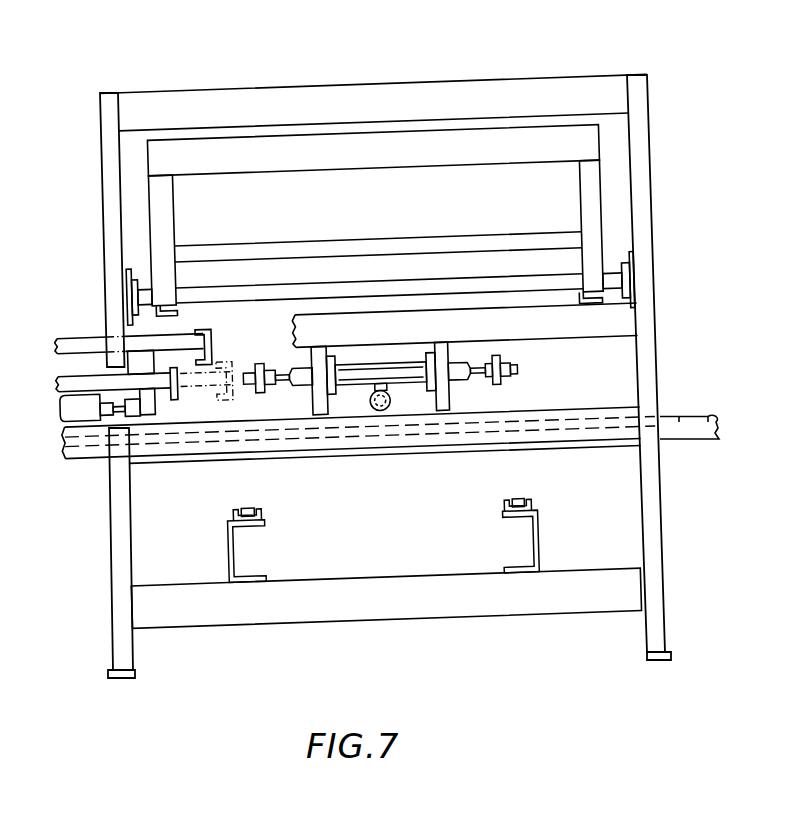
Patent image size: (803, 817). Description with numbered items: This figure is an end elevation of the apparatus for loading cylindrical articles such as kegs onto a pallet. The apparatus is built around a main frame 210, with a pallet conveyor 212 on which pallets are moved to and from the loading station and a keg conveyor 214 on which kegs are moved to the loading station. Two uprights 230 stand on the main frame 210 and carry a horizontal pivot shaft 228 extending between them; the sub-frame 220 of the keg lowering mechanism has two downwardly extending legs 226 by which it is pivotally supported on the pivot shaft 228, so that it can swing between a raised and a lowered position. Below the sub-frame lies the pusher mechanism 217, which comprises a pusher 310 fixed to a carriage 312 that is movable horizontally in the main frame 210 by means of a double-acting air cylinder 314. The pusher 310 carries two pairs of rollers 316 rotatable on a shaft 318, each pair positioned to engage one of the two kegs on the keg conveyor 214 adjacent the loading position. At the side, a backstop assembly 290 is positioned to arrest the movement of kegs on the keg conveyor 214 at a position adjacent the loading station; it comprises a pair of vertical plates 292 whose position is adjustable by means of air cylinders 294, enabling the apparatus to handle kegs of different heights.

The main frame 210 is at (206, 105).
The sub-frame 220 is at (547, 143).
The downwardly extending legs 226 is at (163, 193).
The uprights 230 is at (113, 217).
The horizontal pivot shaft 228 is at (557, 280).
The backstop assembly 290 is at (82, 382).
The vertical plates 292 is at (177, 397).
The air cylinders 294 is at (84, 413).
The rollers 316 is at (257, 362).
The shaft 318 is at (283, 385).
The carriage 312 is at (355, 375).
The double-acting air cylinder 314 is at (387, 411).
The pusher 310 is at (477, 375).
The pusher mechanism 217 is at (413, 395).
The keg conveyor 214 is at (688, 417).
The pallet conveyor 212 is at (518, 493).